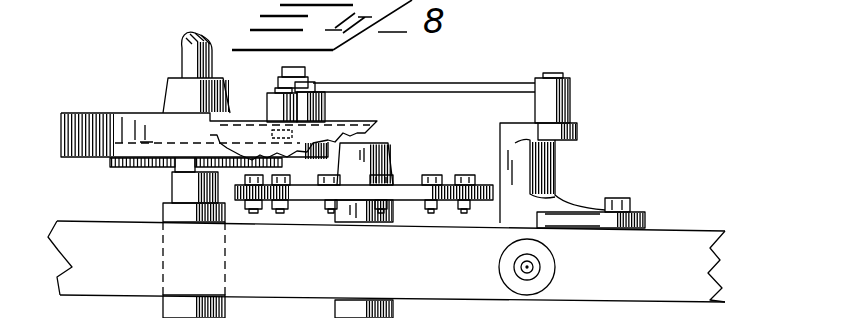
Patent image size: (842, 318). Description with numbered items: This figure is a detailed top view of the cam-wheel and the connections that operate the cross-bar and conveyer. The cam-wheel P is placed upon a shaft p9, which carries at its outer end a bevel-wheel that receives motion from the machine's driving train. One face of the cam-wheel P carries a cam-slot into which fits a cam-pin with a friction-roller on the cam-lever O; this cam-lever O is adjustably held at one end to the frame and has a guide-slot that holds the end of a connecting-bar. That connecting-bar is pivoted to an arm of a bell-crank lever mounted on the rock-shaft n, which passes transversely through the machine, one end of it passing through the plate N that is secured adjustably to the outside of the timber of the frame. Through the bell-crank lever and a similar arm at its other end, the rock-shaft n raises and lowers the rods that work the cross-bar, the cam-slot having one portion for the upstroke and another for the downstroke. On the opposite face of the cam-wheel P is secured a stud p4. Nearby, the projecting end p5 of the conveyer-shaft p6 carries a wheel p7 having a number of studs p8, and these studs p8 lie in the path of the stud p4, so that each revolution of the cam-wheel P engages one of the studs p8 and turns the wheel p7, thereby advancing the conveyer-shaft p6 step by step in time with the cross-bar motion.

The cam-wheel P is at (60, 131).
The stud p4 is at (173, 170).
The projecting end of conveyer-shaft p5 is at (399, 152).
The conveyer-shaft p6 is at (394, 220).
The wheel p7 is at (393, 175).
The studs p8 is at (466, 178).
The shaft p9 is at (182, 53).
The cam-lever O is at (267, 100).
The plate N is at (500, 218).
The rock-shaft n is at (565, 148).